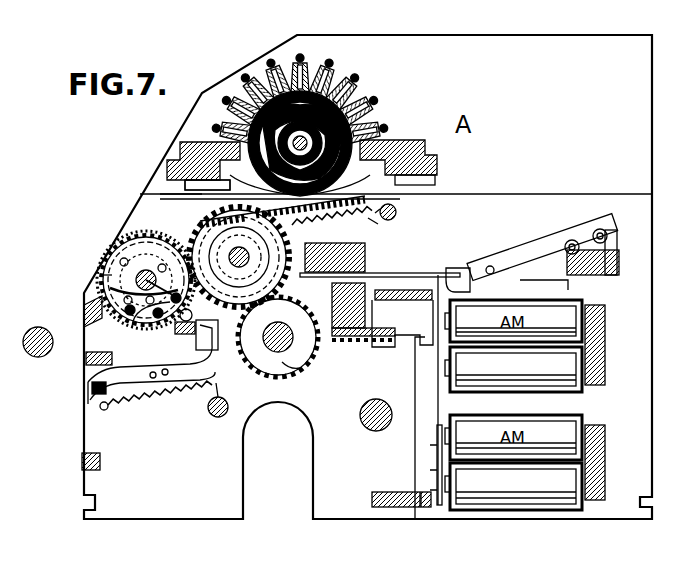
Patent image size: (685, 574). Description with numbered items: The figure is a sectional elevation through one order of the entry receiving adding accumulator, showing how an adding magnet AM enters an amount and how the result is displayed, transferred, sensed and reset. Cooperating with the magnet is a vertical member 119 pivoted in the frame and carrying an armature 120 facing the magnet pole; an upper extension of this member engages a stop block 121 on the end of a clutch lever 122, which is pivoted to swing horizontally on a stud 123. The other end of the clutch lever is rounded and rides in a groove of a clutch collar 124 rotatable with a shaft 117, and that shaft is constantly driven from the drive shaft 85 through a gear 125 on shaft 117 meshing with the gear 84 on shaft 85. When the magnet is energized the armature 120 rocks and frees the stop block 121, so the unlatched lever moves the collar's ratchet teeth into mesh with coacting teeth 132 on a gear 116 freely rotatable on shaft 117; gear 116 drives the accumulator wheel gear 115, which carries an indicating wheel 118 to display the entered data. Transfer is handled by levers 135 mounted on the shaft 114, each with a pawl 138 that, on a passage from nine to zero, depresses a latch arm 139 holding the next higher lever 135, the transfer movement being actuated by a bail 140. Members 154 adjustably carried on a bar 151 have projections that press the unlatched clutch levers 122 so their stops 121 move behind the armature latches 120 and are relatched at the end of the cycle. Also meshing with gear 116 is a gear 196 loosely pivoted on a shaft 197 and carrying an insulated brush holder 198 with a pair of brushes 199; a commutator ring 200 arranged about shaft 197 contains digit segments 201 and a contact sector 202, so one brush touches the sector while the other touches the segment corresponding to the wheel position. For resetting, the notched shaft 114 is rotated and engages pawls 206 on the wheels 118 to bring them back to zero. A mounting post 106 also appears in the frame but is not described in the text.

The gear 84 is at (288, 372).
The drive shaft 85 is at (304, 371).
The mounting post 106 is at (40, 356).
The shaft 114 is at (135, 262).
The accumulator wheel gear 115 is at (100, 275).
The gear 116 is at (191, 188).
The shaft 117 is at (140, 194).
The indicating wheel 118 is at (124, 241).
The vertical member 119 is at (418, 418).
The armature 120 is at (420, 355).
The stop block 121 is at (408, 276).
The clutch lever 122 is at (378, 270).
The stud 123 is at (326, 350).
The clutch collar 124 is at (288, 232).
The gear 125 is at (170, 225).
The teeth 132 is at (238, 271).
The lever 135 is at (221, 392).
The pawl 138 is at (268, 338).
The latch arm 139 is at (142, 400).
The bail 140 is at (160, 352).
The bar 151 is at (566, 286).
The member 154 is at (524, 266).
The gear 196 is at (370, 218).
The shaft 197 is at (222, 118).
The brush holder 198 is at (268, 85).
The brushes 199 is at (308, 143).
The commutator ring 200 is at (398, 100).
The segments 201 is at (352, 78).
The contact sector 202 is at (396, 212).
The pawl 206 is at (146, 310).